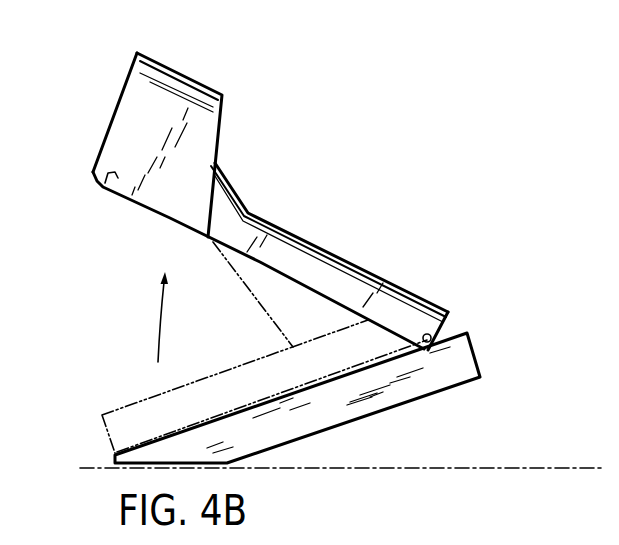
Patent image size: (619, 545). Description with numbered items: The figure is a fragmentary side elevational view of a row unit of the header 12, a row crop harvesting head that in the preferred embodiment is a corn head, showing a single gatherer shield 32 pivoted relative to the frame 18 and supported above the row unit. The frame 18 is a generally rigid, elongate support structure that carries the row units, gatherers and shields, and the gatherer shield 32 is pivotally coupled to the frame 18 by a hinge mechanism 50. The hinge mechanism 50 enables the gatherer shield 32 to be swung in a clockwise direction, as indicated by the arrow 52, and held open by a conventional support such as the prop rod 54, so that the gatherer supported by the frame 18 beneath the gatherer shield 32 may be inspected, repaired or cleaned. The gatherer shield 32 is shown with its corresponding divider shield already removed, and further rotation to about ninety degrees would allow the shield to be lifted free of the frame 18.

The header 12 is at (324, 148).
The frame 18 is at (330, 428).
The gatherer shield 32 is at (351, 262).
The hinge mechanism 50 is at (448, 318).
The arrow 52 is at (157, 322).
The prop rod 54 is at (263, 316).